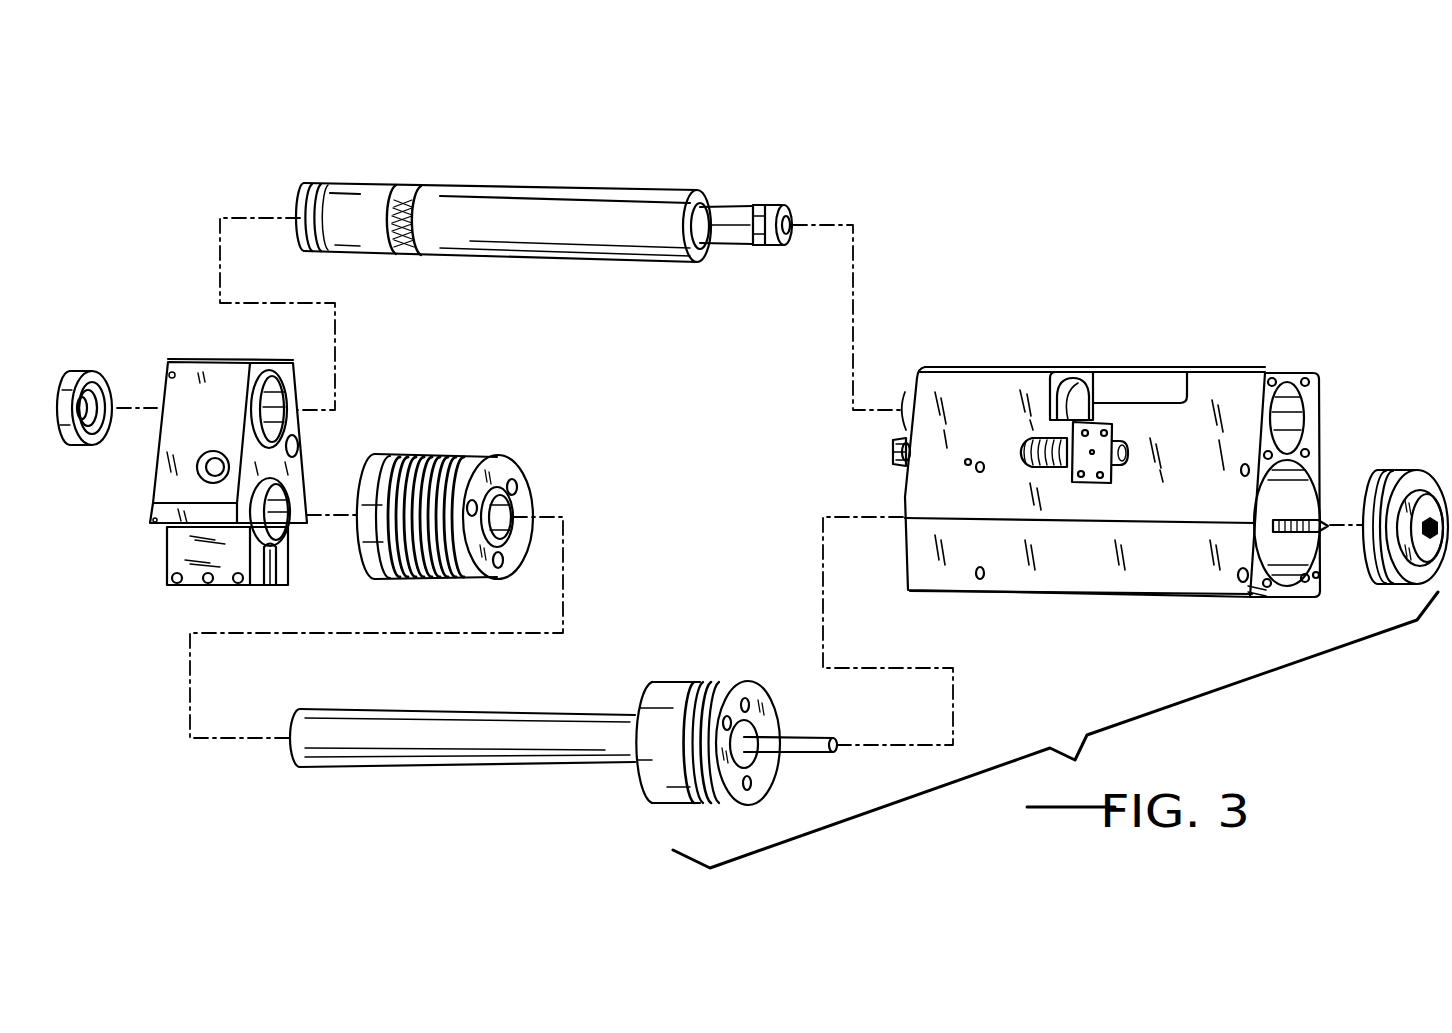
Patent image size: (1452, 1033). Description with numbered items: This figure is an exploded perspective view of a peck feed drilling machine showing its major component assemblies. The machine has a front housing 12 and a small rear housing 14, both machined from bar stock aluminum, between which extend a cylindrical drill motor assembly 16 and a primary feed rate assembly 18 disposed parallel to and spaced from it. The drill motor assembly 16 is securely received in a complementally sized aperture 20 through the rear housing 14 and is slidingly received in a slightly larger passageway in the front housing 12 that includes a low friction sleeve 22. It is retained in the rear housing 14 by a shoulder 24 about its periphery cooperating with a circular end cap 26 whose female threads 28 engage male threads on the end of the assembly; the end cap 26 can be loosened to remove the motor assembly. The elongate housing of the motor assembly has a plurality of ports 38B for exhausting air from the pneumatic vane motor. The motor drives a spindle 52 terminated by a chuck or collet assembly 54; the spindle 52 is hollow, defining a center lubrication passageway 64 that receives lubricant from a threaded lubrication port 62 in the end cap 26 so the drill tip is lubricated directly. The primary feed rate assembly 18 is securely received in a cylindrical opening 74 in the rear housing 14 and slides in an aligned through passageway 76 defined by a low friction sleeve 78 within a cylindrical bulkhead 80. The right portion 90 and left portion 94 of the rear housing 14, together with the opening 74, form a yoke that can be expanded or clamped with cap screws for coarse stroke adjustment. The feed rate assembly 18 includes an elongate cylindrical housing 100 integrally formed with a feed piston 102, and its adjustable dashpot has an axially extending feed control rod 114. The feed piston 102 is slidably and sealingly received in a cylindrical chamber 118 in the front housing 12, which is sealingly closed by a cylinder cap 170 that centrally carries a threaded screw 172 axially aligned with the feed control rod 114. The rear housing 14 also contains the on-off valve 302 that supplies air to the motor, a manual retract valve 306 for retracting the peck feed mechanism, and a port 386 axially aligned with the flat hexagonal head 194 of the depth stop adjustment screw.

The front housing 12 is at (1285, 367).
The rear housing 14 is at (150, 482).
The cylindrical drill motor assembly 16 is at (603, 144).
The primary feed rate assembly 18 is at (588, 752).
The aperture 20 is at (275, 392).
The low friction sleeve 22 is at (1070, 397).
The shoulder 24 is at (413, 183).
The circular end cap 26 is at (68, 376).
The female threads 28 is at (112, 378).
The ports 38B is at (423, 250).
The spindle 52 is at (728, 203).
The chuck or collet assembly 54 is at (770, 246).
The threaded lubrication port 62 is at (120, 438).
The center lubrication passageway 64 is at (795, 215).
The cylindrical opening 74 is at (285, 498).
The through passageway 76 is at (535, 537).
The low friction sleeve 78 is at (517, 503).
The cylindrical bulkhead 80 is at (497, 457).
The right portion 90 is at (187, 547).
The left portion 94 is at (337, 553).
The elongate cylindrical housing 100 is at (458, 708).
The feed piston 102 is at (652, 803).
The feed control rod 114 is at (803, 730).
The cylindrical chamber 118 is at (1302, 505).
The cylinder cap 170 is at (1413, 483).
The threaded screw 172 is at (1324, 517).
The flat hexagonal head 194 is at (888, 450).
The on-off valve 302 is at (204, 457).
The manual retract valve 306 is at (1257, 592).
The port 386 is at (305, 418).